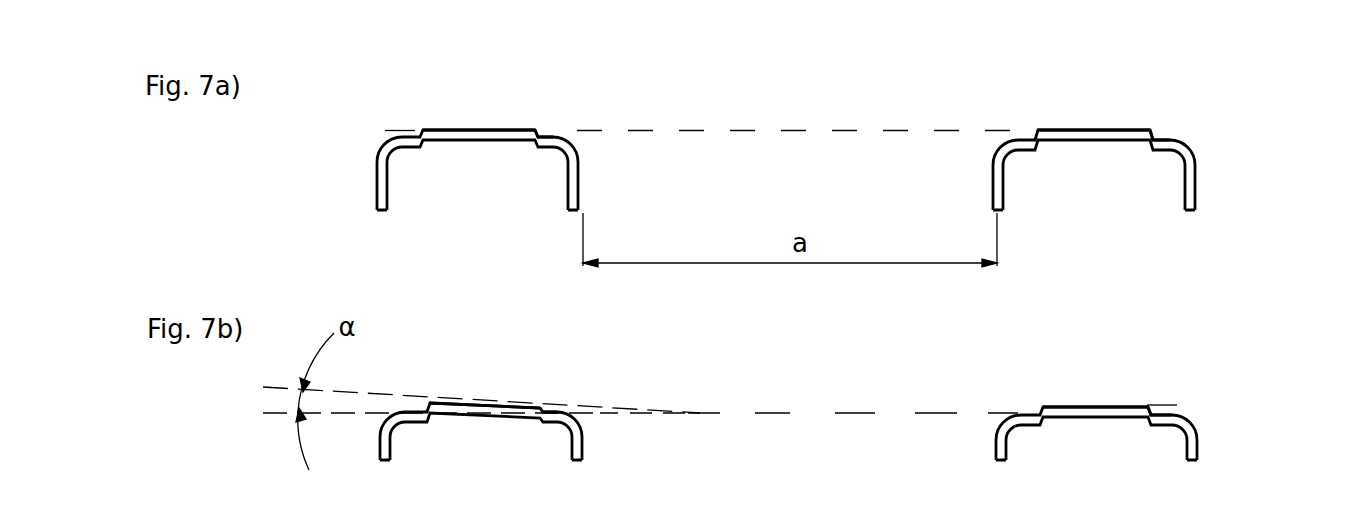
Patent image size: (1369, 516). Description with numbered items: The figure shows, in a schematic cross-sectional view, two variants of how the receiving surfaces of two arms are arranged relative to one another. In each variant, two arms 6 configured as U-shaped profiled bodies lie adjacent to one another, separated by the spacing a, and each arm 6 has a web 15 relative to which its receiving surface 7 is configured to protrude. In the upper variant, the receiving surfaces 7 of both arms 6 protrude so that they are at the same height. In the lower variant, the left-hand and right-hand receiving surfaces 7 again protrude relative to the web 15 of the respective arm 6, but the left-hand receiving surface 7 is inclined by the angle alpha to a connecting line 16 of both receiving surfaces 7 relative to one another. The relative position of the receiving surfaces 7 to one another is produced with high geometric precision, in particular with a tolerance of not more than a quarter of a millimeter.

In FIG. 7a, the arm 6 is at (578, 177).
In FIG. 7b, the arm 6 is at (580, 443).
In FIG. 7a, the receiving surface 7 is at (460, 112).
In FIG. 7b, the receiving surface 7 is at (470, 387).
In FIG. 7a, the web 15 is at (558, 118).
In FIG. 7b, the web 15 is at (562, 398).
In FIG. 7b, the connecting line 16 is at (860, 414).